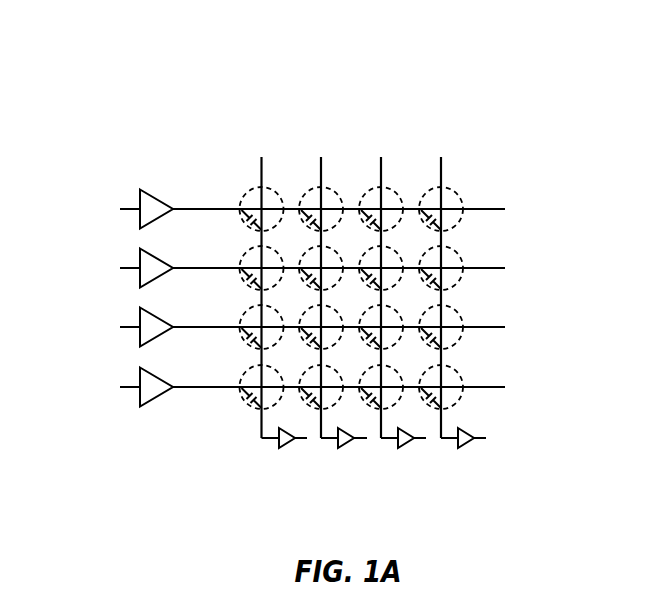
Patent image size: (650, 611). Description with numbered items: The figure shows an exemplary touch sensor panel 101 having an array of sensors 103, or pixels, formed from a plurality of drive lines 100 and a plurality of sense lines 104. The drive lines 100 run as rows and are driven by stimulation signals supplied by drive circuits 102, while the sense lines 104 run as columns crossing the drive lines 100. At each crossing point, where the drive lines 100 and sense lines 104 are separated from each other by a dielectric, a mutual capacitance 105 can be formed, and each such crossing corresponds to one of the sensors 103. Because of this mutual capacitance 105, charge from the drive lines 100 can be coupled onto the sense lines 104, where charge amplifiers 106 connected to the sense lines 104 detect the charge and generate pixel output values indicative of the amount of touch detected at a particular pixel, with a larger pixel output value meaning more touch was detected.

The drive lines 100 is at (212, 207).
The touch sensor panel 101 is at (368, 124).
The drive circuits 102 is at (140, 378).
The sensors 103 is at (246, 186).
The sense lines 104 is at (441, 172).
The mutual capacitance 105 is at (247, 395).
The charge amplifiers 106 is at (468, 443).